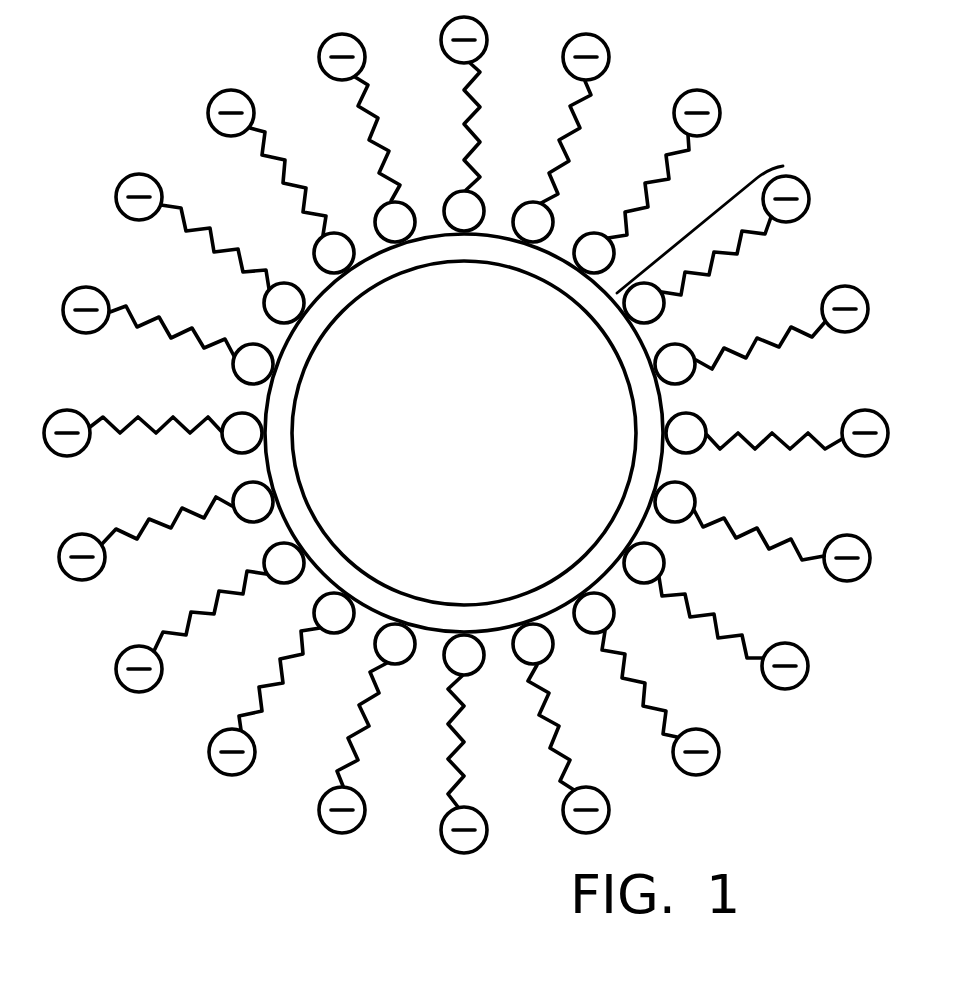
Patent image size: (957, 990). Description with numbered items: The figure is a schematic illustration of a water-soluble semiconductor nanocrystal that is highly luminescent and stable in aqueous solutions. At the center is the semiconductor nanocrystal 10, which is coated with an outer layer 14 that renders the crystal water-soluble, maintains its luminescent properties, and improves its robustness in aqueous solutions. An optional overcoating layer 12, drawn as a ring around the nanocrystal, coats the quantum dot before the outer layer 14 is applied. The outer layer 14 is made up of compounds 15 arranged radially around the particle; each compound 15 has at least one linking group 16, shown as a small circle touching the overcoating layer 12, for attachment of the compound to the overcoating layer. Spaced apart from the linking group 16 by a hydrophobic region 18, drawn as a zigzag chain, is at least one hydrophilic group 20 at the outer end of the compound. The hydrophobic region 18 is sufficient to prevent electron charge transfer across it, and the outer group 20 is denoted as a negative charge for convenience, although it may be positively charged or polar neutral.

The semiconductor nanocrystal 10 is at (464, 433).
The overcoating layer 12 is at (375, 600).
The outer layer 14 is at (826, 203).
The compound 15 is at (714, 204).
The linking group 16 is at (677, 360).
The hydrophobic region 18 is at (703, 623).
The hydrophilic group 20 is at (871, 553).